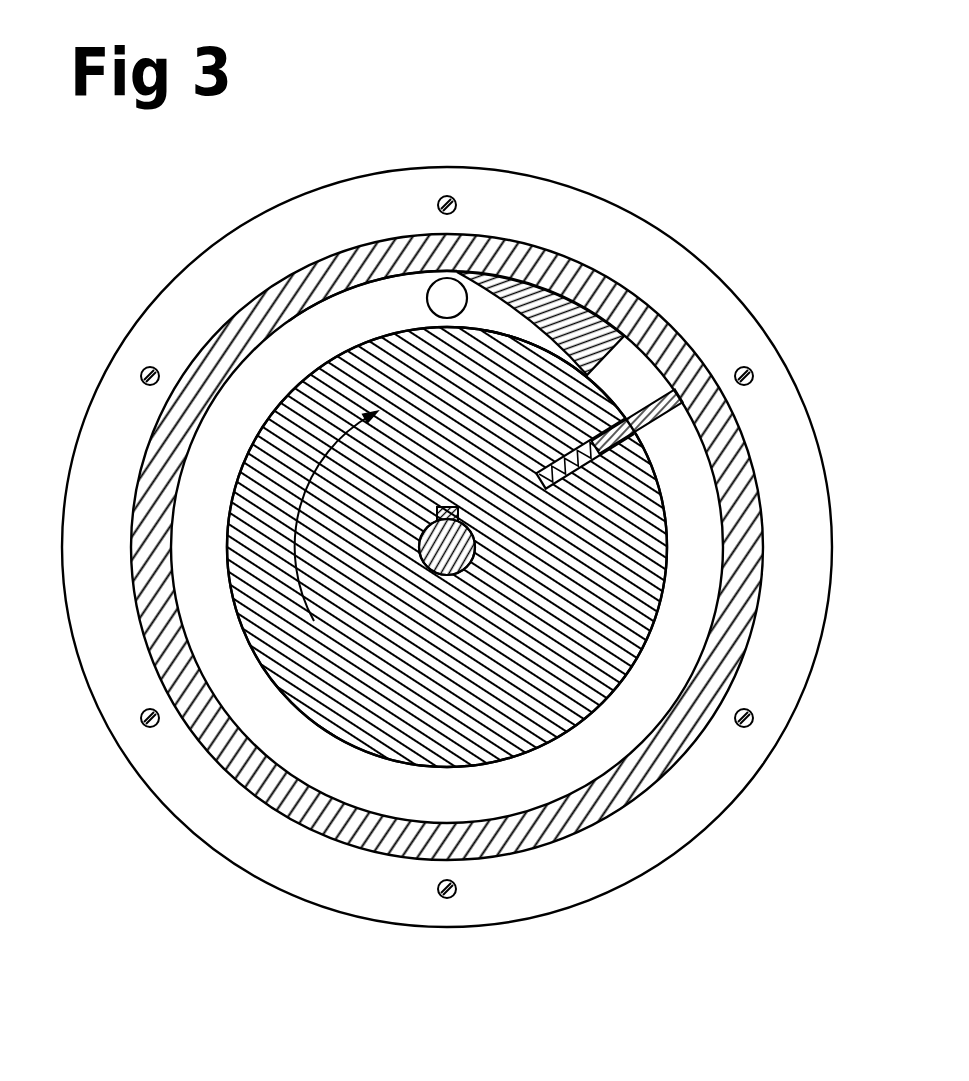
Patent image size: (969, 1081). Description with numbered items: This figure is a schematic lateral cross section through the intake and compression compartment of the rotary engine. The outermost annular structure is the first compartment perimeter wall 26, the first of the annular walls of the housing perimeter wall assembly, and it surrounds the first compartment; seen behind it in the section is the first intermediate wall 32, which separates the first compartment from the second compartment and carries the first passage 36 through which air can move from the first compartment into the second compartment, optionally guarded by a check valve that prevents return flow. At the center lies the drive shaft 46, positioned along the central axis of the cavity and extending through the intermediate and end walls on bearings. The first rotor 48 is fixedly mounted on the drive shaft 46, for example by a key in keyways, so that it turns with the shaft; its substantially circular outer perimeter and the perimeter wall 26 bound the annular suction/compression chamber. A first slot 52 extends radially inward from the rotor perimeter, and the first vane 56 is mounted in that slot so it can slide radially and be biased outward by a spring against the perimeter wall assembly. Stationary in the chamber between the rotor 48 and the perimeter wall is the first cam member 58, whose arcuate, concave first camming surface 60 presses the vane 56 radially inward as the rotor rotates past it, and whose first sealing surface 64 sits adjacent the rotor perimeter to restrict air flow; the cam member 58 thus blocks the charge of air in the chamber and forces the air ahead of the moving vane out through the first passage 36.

The first compartment perimeter wall 26 is at (473, 252).
The first intermediate wall 32 is at (392, 200).
The first passage 36 is at (430, 287).
The drive shaft 46 is at (447, 577).
The first rotor 48 is at (305, 710).
The first slot 52 is at (580, 432).
The first vane 56 is at (690, 392).
The first cam member 58 is at (575, 302).
The first camming surface 60 is at (520, 320).
The first sealing surface 64 is at (560, 362).